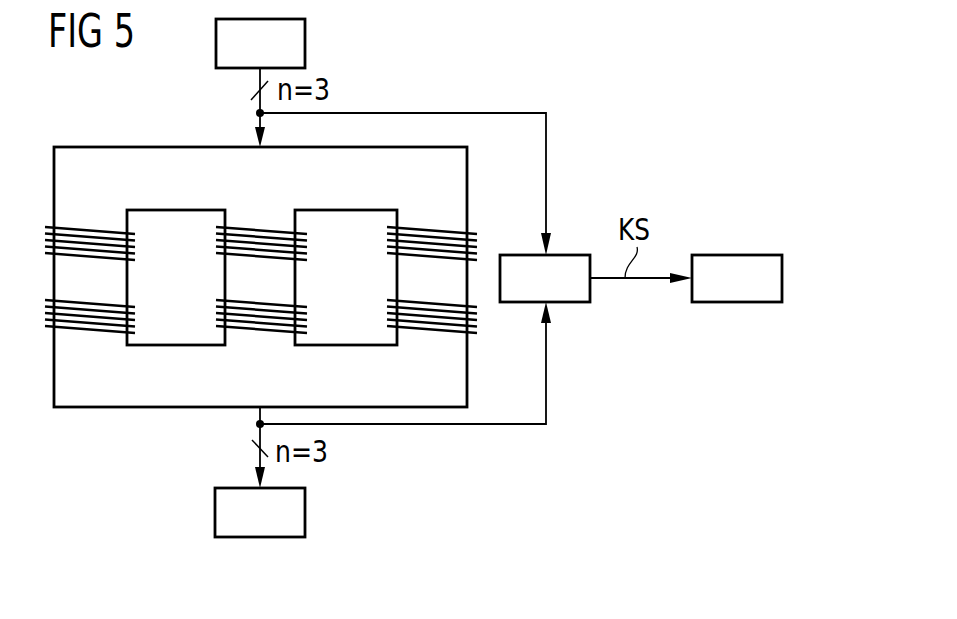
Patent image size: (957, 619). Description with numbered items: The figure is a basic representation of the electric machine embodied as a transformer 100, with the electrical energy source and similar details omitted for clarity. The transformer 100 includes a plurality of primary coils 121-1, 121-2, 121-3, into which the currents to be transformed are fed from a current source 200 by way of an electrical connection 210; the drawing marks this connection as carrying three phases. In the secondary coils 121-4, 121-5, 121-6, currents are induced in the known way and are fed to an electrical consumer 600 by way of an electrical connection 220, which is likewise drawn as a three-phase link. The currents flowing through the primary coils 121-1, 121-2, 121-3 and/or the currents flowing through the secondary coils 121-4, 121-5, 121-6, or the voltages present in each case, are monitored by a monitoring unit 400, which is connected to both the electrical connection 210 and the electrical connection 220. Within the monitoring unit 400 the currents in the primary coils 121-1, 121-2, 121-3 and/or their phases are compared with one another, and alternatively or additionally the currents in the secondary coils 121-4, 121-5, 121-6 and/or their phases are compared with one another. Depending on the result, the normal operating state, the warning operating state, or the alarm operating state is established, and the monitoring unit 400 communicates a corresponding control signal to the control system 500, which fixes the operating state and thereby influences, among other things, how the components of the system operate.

The transformer 100 is at (162, 147).
The primary coil 121-1 is at (89, 227).
The primary coil 121-2 is at (260, 227).
The primary coil 121-3 is at (433, 227).
The secondary coil 121-4 is at (90, 330).
The secondary coil 121-5 is at (260, 330).
The secondary coil 121-6 is at (430, 330).
The current source 200 is at (307, 43).
The electrical connection 210 is at (546, 165).
The electrical connection 220 is at (546, 383).
The monitoring unit 400 is at (590, 293).
The control system 500 is at (737, 255).
The electrical consumer 600 is at (306, 513).